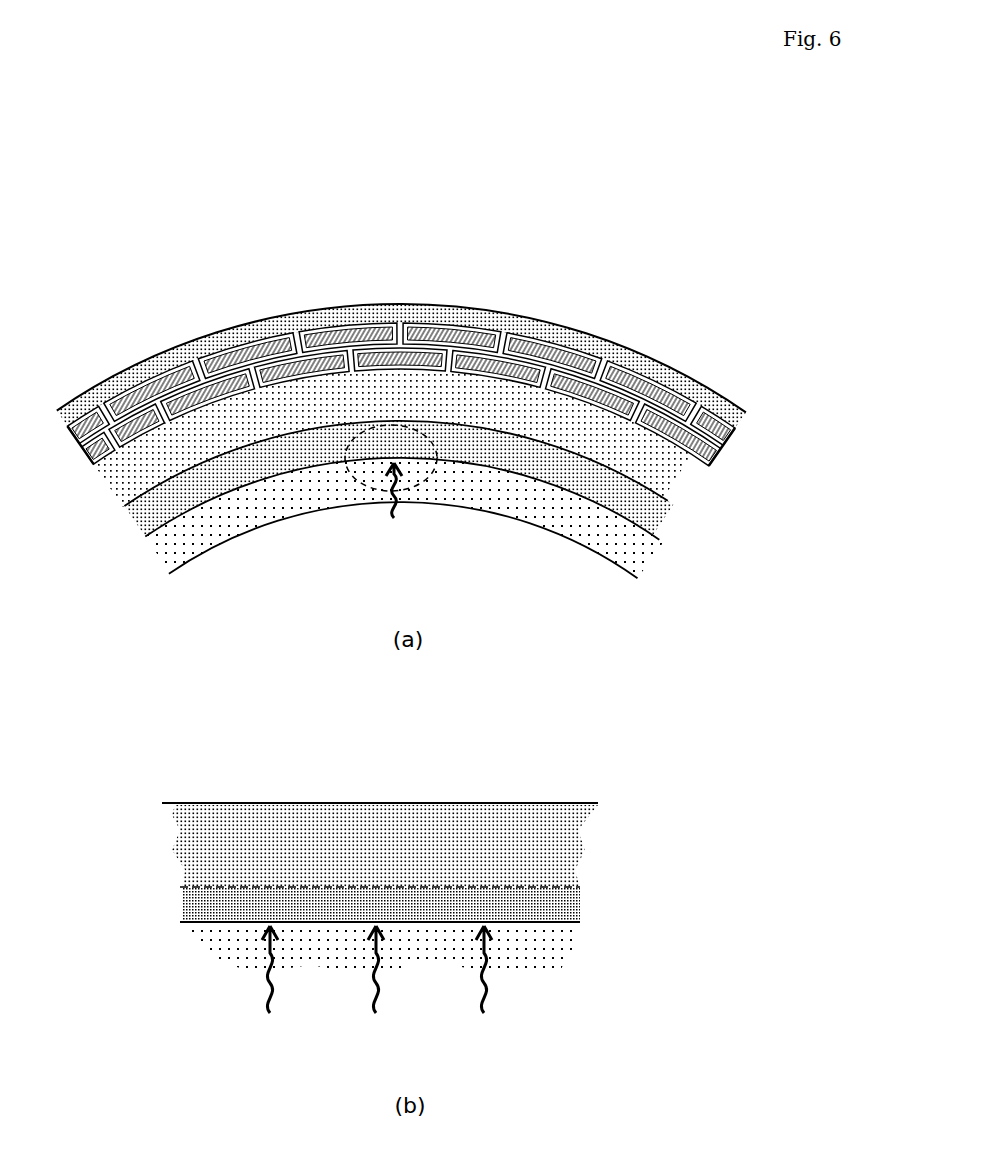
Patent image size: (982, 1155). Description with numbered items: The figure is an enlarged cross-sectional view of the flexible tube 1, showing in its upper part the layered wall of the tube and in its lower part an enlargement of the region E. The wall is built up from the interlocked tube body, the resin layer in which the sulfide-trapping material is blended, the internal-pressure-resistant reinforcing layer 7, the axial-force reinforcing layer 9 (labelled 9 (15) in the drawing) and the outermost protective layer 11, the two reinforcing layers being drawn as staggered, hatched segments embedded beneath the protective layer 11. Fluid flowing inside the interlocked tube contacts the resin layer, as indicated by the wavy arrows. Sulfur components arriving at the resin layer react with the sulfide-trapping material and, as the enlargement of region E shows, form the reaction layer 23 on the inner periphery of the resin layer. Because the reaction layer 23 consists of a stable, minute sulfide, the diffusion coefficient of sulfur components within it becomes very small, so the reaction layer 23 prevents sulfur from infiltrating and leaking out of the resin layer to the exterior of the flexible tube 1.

The flexible tube 1 is at (594, 303).
The internal-pressure-resistant reinforcing layer 7 is at (672, 467).
The axial-force reinforcing layer 9 is at (362, 328).
The hollow portion 15 is at (402, 337).
The protective layer 11 is at (233, 334).
The reaction layer 23 is at (200, 905).
The region E is at (347, 466).